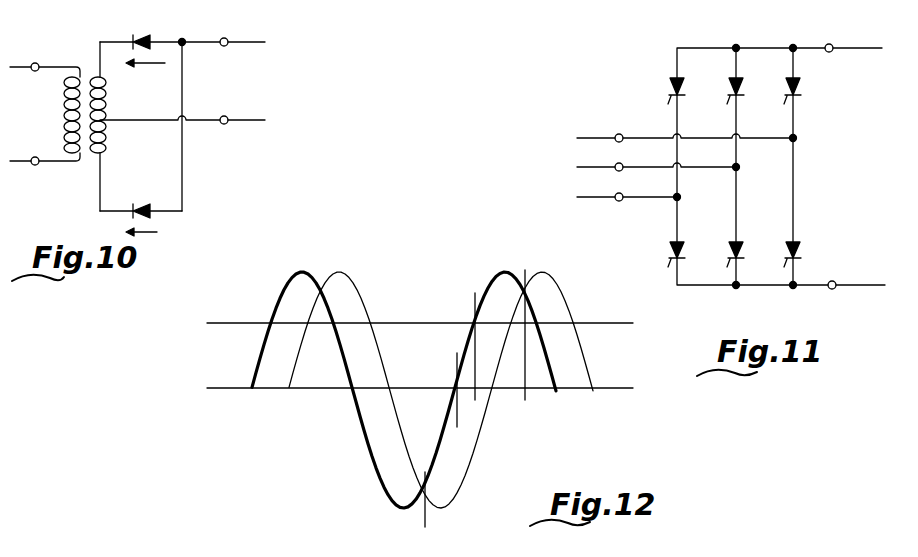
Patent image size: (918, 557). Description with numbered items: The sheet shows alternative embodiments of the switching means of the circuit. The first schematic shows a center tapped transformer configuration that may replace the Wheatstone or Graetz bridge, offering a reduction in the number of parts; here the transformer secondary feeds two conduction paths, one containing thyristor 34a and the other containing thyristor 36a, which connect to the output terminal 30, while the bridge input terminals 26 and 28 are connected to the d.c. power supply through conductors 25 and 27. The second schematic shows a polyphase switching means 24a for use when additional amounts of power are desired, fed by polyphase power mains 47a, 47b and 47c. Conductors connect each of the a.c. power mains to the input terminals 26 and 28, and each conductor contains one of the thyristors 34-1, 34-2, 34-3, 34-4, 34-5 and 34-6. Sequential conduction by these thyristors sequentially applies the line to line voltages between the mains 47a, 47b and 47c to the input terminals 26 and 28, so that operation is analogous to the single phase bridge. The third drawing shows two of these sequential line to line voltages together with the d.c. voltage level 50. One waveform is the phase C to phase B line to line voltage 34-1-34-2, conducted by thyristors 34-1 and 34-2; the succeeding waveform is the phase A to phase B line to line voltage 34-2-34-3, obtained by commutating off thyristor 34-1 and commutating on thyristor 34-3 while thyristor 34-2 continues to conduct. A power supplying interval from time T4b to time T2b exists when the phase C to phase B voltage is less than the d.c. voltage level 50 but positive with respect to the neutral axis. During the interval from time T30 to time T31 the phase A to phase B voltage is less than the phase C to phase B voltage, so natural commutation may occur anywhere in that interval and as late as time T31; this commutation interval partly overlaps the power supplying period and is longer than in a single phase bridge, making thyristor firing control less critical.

In FIG. 10, the output terminal 30 is at (53, 45).
In FIG. 10, the thyristor 34a is at (165, 18).
In FIG. 10, the thyristor 36a is at (174, 238).
In FIG. 10, the input terminal 26 is at (220, 47).
In FIG. 11, the input terminal 26 is at (826, 53).
In FIG. 10, the conductor 25 is at (248, 43).
In FIG. 11, the conductor 25 is at (858, 49).
In FIG. 10, the input terminal 28 is at (222, 126).
In FIG. 11, the input terminal 28 is at (830, 290).
In FIG. 10, the conductor 27 is at (252, 122).
In FIG. 11, the conductor 27 is at (865, 290).
In FIG. 11, the thyristor 34-1 is at (700, 233).
In FIG. 11, the thyristor 34-2 is at (745, 97).
In FIG. 11, the thyristor 34-3 is at (800, 246).
In FIG. 11, the thyristor 34-4 is at (686, 97).
In FIG. 11, the thyristor 34-5 is at (743, 246).
In FIG. 11, the thyristor 34-6 is at (802, 97).
In FIG. 11, the polyphase power main 47a is at (581, 114).
In FIG. 11, the polyphase power main 47b is at (581, 146).
In FIG. 11, the polyphase power main 47c is at (581, 177).
In FIG. 11, the polyphase switching means 24a is at (788, 191).
In FIG. 12, the d.c. voltage level 50 is at (402, 322).
In FIG. 12, the phase C to phase B line to line voltage 34-1-34-2 is at (300, 272).
In FIG. 12, the phase A to phase B line to line voltage 34-2-34-3 is at (340, 270).
In FIG. 12, the time T30 is at (441, 502).
In FIG. 12, the time T31 is at (525, 350).
In FIG. 12, the time T2b is at (470, 359).
In FIG. 12, the time T4b is at (455, 403).